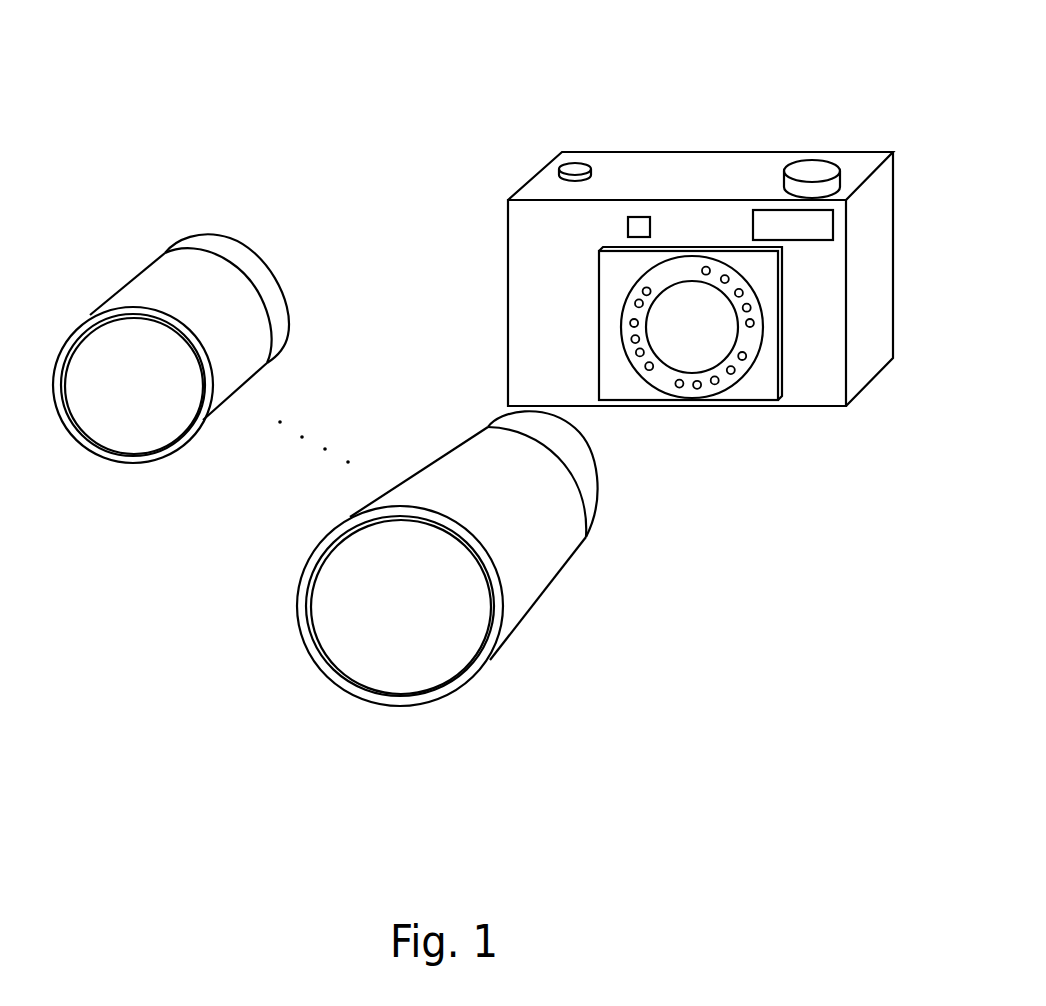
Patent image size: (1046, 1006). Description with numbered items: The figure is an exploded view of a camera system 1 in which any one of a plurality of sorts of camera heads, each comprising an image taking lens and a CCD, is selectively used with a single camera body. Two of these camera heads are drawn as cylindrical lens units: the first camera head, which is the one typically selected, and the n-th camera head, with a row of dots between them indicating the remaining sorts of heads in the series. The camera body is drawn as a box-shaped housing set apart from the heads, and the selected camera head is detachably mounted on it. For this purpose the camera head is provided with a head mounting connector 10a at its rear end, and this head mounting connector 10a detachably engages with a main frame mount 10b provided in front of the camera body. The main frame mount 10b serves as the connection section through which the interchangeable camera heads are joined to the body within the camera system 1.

The camera system 1 is at (509, 367).
The head mounting connector 10a is at (604, 471).
The main frame mount 10b is at (734, 372).